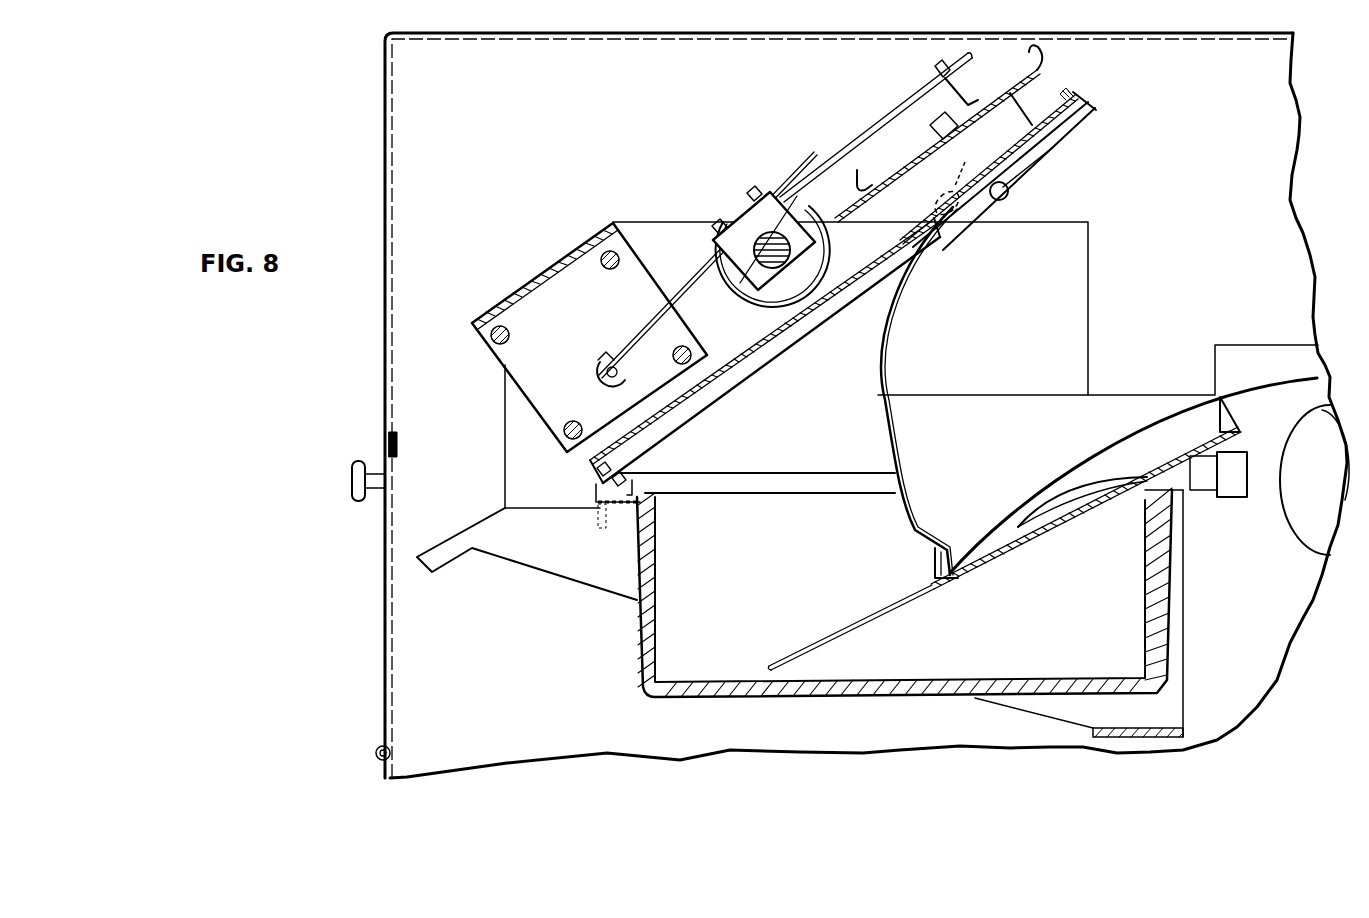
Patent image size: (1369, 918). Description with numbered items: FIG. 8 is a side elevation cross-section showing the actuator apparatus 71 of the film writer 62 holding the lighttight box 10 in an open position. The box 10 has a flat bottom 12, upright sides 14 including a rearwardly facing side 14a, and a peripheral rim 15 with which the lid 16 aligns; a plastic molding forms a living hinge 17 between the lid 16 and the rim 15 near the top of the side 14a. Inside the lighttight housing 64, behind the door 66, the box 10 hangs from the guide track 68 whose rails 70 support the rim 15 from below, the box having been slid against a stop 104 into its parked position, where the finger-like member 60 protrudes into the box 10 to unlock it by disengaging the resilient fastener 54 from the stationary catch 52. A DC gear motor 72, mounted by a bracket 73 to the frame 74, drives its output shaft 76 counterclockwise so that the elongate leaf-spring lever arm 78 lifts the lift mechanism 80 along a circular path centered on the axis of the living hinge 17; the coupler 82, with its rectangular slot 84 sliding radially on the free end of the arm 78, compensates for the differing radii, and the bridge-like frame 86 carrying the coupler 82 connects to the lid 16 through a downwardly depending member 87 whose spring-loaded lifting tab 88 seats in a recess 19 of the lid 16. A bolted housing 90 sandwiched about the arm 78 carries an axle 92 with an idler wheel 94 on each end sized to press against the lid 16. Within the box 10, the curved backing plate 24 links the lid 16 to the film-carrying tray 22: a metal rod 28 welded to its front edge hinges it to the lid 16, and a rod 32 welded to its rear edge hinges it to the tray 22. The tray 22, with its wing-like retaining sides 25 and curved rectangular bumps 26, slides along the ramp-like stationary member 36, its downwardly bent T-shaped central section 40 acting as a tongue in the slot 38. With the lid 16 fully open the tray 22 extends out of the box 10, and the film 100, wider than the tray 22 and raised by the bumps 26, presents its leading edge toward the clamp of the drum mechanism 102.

The lighttight box 10 is at (628, 670).
The flat bottom 12 is at (757, 698).
The upright sides 14 is at (892, 619).
The rearwardly facing side 14a is at (637, 638).
The peripheral rim 15 is at (765, 350).
The lid 16 is at (737, 345).
The living hinge 17 is at (590, 482).
The recess 19 is at (933, 205).
The film-carrying tray 22 is at (1240, 405).
The backing plate 24 is at (940, 292).
The retaining sides 25 is at (978, 466).
The curved rectangular bumps 26 is at (1100, 470).
The metal rod 28 is at (1012, 188).
The rod 32 is at (930, 575).
The stationary member 36 is at (1100, 505).
The slot 38 is at (995, 595).
The T-shaped central section 40 is at (1010, 548).
The stationary catch 52 is at (1212, 450).
The resilient fastener 54 is at (1090, 110).
The finger-like member 60 is at (1195, 455).
The film writer 62 is at (378, 95).
The lighttight housing 64 is at (384, 34).
The door 66 is at (384, 547).
The guide track 68 is at (482, 498).
The rails 70 is at (557, 497).
The actuator apparatus 71 is at (664, 214).
The DC gear motor 72 is at (559, 337).
The bracket 73 is at (552, 275).
The frame 74 is at (1093, 268).
The output shaft 76 is at (600, 377).
The lever arm 78 is at (695, 280).
The lift mechanism 80 is at (898, 96).
The coupler 82 is at (935, 66).
The rectangular slot 84 is at (935, 106).
The bridge-like frame 86 is at (1050, 68).
The downwardly depending member 87 is at (788, 256).
The spring-loaded lifting tab 88 is at (960, 164).
The bolted housing 90 is at (740, 228).
The axle 92 is at (790, 210).
The idler wheel 94 is at (822, 222).
The film 100 is at (1040, 473).
The drum mechanism 102 is at (1300, 530).
The stop 104 is at (1235, 448).